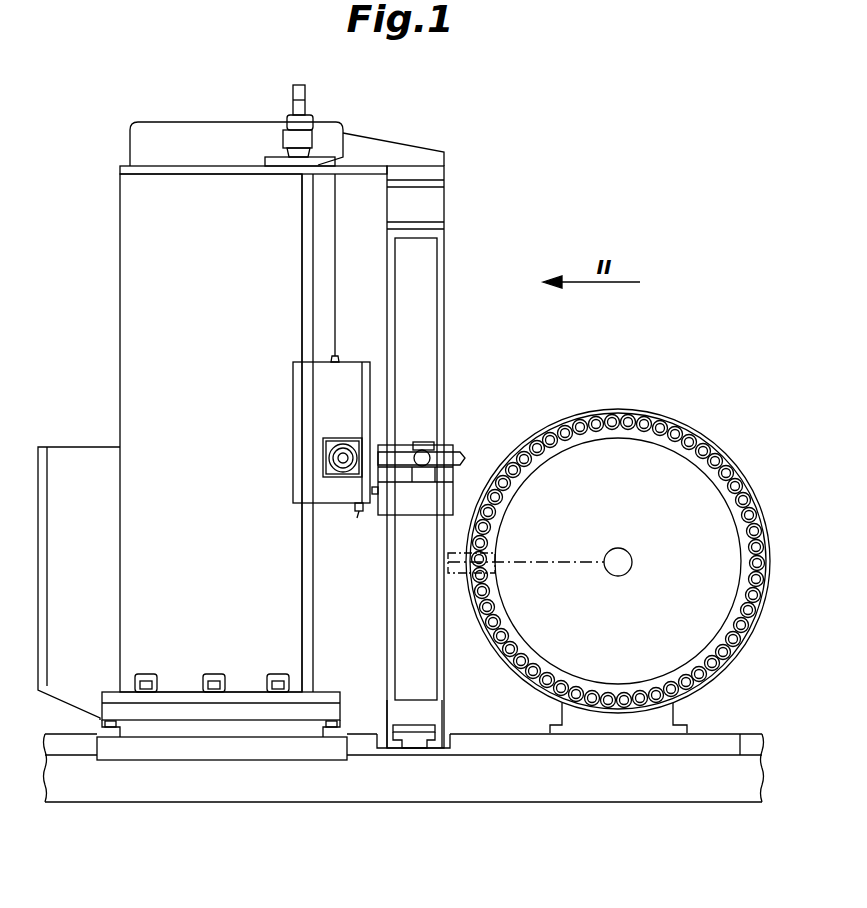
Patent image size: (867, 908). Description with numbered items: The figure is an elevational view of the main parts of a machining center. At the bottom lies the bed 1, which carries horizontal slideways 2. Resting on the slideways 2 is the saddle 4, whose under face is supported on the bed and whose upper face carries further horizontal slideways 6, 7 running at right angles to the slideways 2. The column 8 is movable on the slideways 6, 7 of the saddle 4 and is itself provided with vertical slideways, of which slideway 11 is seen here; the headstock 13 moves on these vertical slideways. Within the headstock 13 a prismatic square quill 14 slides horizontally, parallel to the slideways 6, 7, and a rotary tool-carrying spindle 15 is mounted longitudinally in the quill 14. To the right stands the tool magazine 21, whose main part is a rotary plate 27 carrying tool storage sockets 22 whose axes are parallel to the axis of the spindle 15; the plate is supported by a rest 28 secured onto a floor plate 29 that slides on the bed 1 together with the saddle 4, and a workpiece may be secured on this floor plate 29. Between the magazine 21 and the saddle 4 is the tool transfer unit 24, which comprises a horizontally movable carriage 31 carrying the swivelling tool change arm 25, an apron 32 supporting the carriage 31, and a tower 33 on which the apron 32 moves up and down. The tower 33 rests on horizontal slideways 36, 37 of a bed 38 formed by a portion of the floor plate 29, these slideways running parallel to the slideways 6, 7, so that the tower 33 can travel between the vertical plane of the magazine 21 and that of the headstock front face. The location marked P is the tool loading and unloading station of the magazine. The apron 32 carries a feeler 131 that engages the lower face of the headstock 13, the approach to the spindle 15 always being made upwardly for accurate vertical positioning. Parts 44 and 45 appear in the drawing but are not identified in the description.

The bed 1 is at (485, 792).
The horizontal slideways 2 is at (75, 748).
The saddle 4 is at (188, 740).
The horizontal slideway 6 is at (135, 713).
The horizontal slideway 7 is at (322, 710).
The column 8 is at (140, 300).
The vertical slideway 11 is at (313, 627).
The headstock 13 is at (347, 388).
The prismatic square quill 14 is at (326, 445).
The rotary tool-carrying spindle 15 is at (340, 462).
The magazine 21 is at (591, 400).
The tool storage sockets 22 is at (716, 462).
The tool transfer unit 24 is at (450, 434).
The swivelling tool change arm 25 is at (455, 458).
The rotary plate 27 is at (625, 455).
The rest 28 is at (667, 722).
The floor plate 29 is at (720, 734).
The carriage 31 is at (427, 437).
The apron 32 is at (443, 507).
The tower 33 is at (425, 282).
The horizontal slideway 36 is at (392, 723).
The horizontal slideway 37 is at (428, 723).
The bed 38 is at (413, 743).
The rod 44 is at (390, 283).
The column head 45 is at (447, 257).
The feeler 131 is at (360, 517).
The tool loading and unloading station P is at (455, 578).